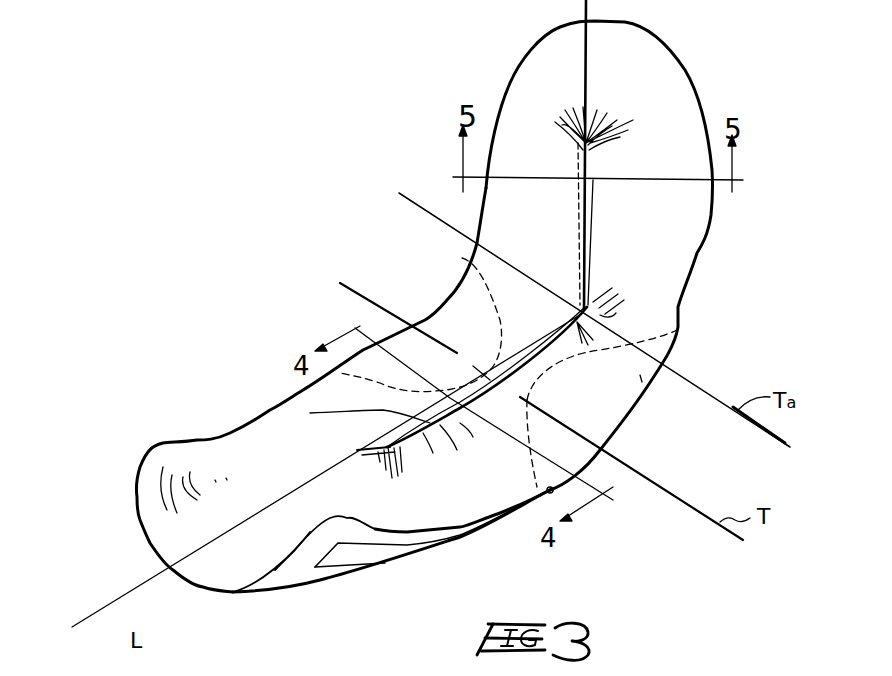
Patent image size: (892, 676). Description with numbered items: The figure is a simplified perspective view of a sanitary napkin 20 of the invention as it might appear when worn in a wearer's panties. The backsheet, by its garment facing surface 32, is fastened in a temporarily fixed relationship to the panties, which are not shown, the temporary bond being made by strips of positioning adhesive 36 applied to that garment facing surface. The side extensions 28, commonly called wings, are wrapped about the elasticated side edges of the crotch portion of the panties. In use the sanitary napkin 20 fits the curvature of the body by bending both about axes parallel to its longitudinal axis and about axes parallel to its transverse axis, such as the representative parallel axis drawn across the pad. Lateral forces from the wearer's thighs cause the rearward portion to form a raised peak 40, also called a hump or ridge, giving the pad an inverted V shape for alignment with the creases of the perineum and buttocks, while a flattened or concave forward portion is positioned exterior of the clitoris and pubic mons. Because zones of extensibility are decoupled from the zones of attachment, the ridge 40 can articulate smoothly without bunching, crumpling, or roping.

The sanitary napkin 20 is at (157, 155).
The side extensions 28 is at (445, 286).
The garment facing surface of the backsheet 32 is at (302, 567).
The positioning adhesive 36 is at (367, 555).
The raised peak 40 is at (310, 413).